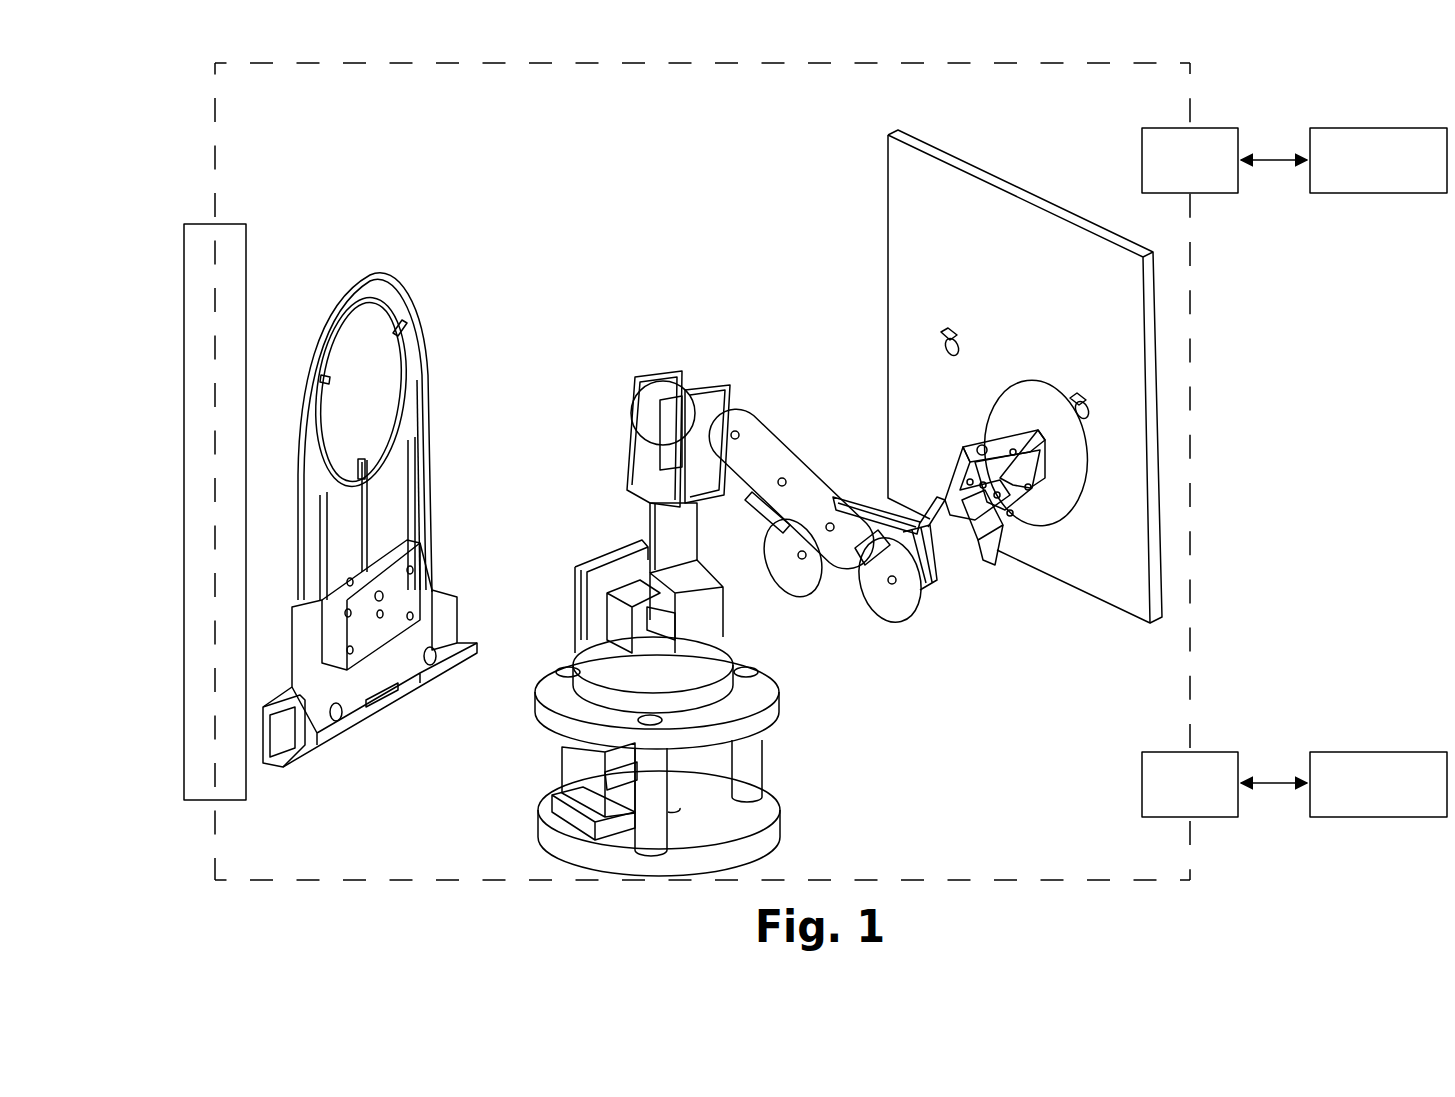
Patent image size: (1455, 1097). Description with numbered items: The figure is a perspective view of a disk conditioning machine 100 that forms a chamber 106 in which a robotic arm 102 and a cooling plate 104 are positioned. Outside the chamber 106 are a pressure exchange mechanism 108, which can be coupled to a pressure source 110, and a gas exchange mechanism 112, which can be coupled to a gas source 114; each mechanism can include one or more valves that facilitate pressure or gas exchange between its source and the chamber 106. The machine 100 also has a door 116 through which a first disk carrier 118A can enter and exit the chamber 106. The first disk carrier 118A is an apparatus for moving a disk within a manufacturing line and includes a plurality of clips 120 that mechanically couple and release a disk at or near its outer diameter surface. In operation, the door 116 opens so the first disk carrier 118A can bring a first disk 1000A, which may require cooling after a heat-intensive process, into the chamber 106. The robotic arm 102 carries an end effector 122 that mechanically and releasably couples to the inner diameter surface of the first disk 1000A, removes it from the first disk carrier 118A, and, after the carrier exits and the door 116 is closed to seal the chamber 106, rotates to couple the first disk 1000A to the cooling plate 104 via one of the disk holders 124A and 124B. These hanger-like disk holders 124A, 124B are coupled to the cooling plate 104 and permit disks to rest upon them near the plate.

The conditioning machine 100 is at (172, 80).
The robotic arm 102 is at (785, 584).
The cooling plate 104 is at (1038, 373).
The chamber 106 is at (447, 130).
The pressure exchange mechanism 108 is at (1190, 160).
The pressure source 110 is at (1371, 127).
The gas exchange mechanism 112 is at (1190, 784).
The gas source 114 is at (1371, 751).
The door 116 is at (247, 238).
The first disk carrier 118A is at (387, 475).
The clips 120 is at (394, 334).
The end effector 122 is at (940, 468).
The first disk holder 124A is at (1092, 411).
The disk holder 124B is at (946, 334).
The first disk 1000A is at (1037, 513).